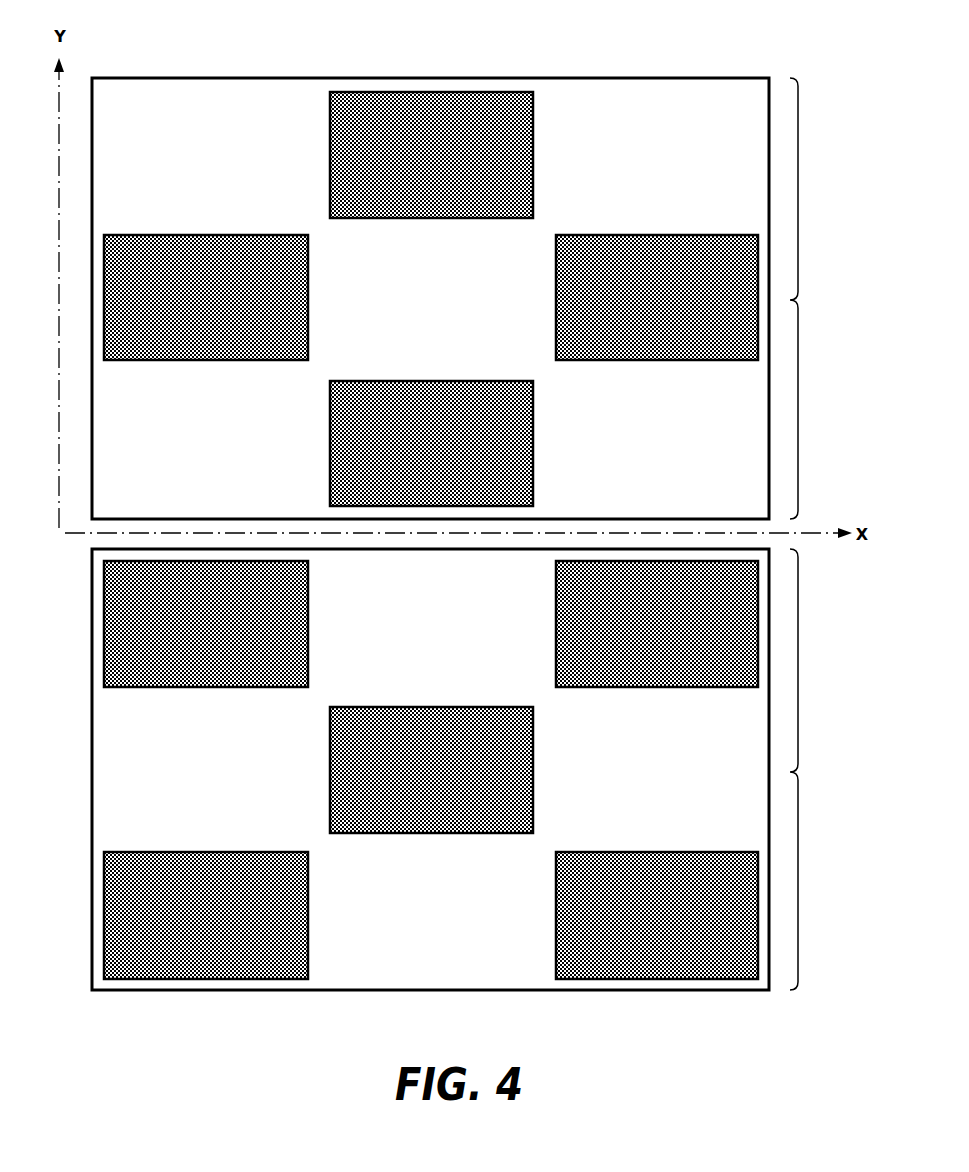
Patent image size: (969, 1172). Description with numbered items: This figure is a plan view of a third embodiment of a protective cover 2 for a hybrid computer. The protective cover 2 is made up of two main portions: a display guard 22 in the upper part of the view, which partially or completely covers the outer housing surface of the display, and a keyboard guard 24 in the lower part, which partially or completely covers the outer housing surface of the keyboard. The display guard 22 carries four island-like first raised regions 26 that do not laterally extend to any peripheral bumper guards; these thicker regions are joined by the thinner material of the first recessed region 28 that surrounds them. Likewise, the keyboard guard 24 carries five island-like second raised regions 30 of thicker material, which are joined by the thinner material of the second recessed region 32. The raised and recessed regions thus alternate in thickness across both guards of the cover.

The protective cover 2 is at (768, 33).
The display guard 22 is at (815, 298).
The keyboard guard 24 is at (815, 769).
The first raised regions 26 is at (462, 107).
The first recessed region 28 is at (297, 100).
The second raised regions 30 is at (455, 817).
The second recessed region 32 is at (368, 971).